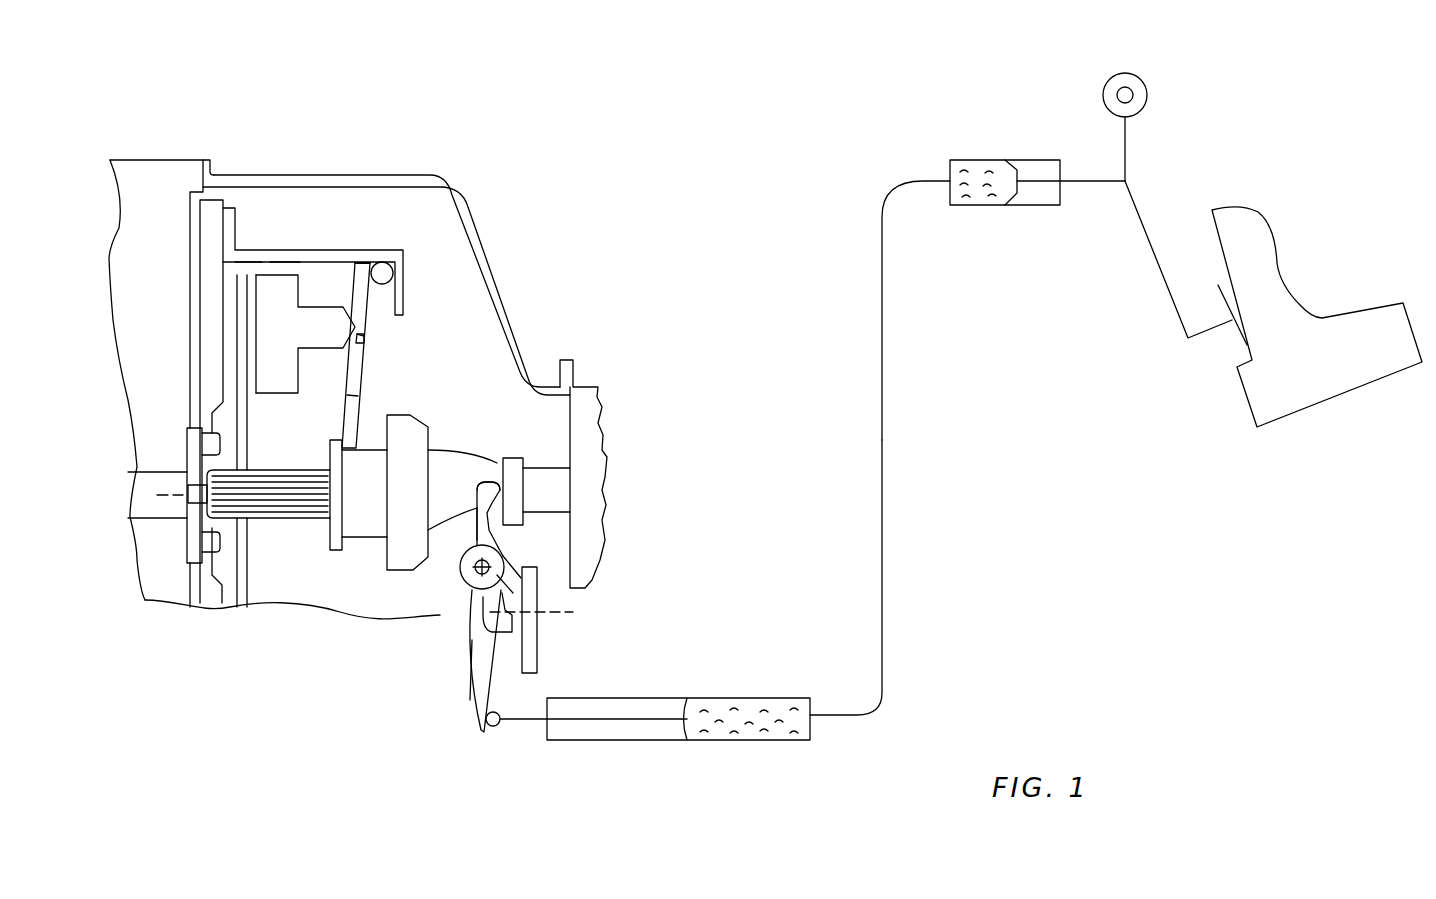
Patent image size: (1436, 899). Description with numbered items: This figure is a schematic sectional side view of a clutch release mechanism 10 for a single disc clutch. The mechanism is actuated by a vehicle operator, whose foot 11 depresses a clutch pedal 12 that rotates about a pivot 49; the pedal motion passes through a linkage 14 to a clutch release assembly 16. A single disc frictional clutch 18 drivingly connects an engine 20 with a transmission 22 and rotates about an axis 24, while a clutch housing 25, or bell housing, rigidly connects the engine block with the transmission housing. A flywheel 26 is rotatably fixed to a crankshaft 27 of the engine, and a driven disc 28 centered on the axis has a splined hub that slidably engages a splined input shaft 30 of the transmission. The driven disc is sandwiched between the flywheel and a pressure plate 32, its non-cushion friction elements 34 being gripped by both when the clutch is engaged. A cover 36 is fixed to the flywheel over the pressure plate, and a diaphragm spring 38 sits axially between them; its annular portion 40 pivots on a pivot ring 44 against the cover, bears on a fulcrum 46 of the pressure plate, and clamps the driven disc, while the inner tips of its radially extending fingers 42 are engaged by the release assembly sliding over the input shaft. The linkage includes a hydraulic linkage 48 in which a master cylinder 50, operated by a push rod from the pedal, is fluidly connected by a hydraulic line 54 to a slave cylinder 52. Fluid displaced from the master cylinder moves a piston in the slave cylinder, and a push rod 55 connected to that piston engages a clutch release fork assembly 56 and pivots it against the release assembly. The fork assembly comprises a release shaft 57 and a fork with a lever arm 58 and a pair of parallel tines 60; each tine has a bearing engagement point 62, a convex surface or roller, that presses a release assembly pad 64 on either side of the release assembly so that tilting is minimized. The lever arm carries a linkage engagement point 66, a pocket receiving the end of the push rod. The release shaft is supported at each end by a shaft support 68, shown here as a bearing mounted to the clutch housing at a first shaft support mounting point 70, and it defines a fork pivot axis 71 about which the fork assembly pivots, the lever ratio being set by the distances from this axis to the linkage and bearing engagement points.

The clutch release mechanism 10 is at (673, 140).
The foot 11 is at (1280, 258).
The clutch pedal 12 is at (1237, 332).
The linkage 14 is at (465, 745).
The clutch release assembly 16 is at (398, 572).
The single disc frictional clutch 18 is at (323, 222).
The engine 20 is at (175, 160).
The transmission 22 is at (585, 387).
The axis 24 is at (182, 497).
The clutch housing 25 is at (453, 172).
The flywheel 26 is at (212, 195).
The crankshaft 27 is at (187, 433).
The driven disc 28 is at (248, 415).
The splined input shaft 30 is at (284, 520).
The pressure plate 32 is at (282, 273).
The non-cushion friction elements 34 is at (230, 270).
The cover 36 is at (369, 262).
The diaphragm spring 38 is at (370, 350).
The annular portion 40 is at (368, 310).
The fingers 42 is at (362, 397).
The pivot ring 44 is at (403, 298).
The fulcrum 46 is at (355, 262).
The hydraulic linkage 48 is at (897, 418).
The pivot 49 is at (1147, 88).
The master cylinder 50 is at (995, 160).
The slave cylinder 52 is at (695, 698).
The hydraulic line 54 is at (887, 592).
The push rod 55 is at (532, 723).
The clutch release fork assembly 56 is at (467, 645).
The release shaft 57 is at (503, 558).
The lever arm 58 is at (473, 707).
The tines 60 is at (478, 512).
The bearing engagement point 62 is at (503, 485).
The release assembly pad 64 is at (495, 482).
The linkage engagement point 66 is at (490, 727).
The shaft support 68 is at (520, 642).
The first shaft support mounting point 70 is at (545, 612).
The fork pivot axis 71 is at (462, 585).